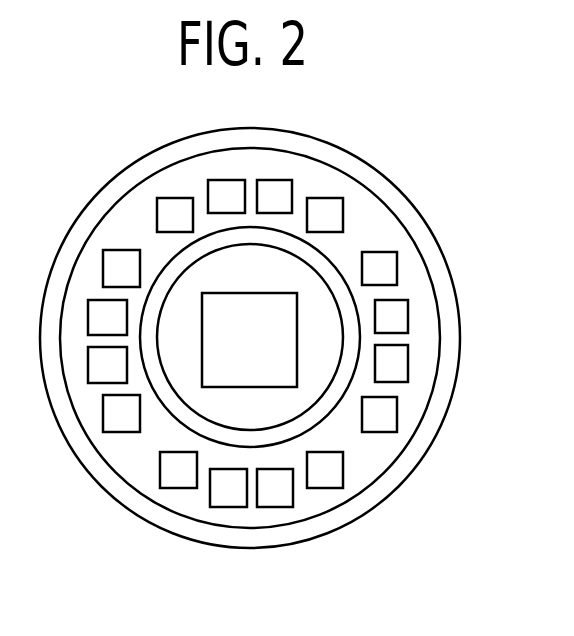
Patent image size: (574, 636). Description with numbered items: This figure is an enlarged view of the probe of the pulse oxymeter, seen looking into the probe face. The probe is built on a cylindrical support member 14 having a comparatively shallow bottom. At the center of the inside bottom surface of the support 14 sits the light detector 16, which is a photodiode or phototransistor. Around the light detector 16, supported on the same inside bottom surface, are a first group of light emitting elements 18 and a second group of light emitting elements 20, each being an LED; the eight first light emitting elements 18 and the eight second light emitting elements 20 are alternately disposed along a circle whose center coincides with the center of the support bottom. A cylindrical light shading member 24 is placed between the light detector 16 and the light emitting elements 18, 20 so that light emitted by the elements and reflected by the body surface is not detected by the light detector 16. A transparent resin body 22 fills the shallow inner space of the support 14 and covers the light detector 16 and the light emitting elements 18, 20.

The cylindrical support member 14 is at (370, 512).
The light detector 16 is at (222, 303).
The first group of light emitting elements 18 is at (332, 208).
The second group of light emitting elements 20 is at (277, 190).
The transparent resin body 22 is at (310, 283).
The cylindrical light shading member 24 is at (178, 415).